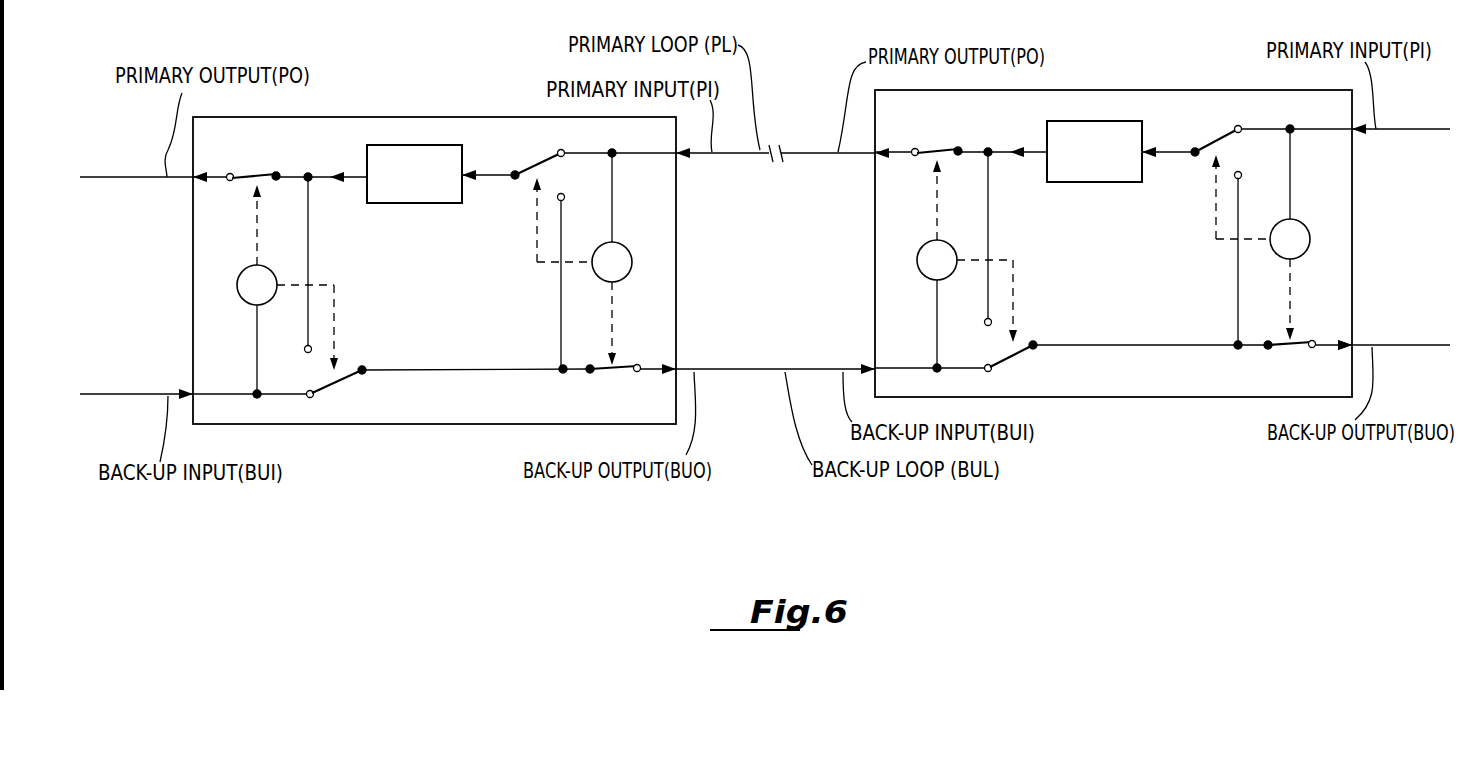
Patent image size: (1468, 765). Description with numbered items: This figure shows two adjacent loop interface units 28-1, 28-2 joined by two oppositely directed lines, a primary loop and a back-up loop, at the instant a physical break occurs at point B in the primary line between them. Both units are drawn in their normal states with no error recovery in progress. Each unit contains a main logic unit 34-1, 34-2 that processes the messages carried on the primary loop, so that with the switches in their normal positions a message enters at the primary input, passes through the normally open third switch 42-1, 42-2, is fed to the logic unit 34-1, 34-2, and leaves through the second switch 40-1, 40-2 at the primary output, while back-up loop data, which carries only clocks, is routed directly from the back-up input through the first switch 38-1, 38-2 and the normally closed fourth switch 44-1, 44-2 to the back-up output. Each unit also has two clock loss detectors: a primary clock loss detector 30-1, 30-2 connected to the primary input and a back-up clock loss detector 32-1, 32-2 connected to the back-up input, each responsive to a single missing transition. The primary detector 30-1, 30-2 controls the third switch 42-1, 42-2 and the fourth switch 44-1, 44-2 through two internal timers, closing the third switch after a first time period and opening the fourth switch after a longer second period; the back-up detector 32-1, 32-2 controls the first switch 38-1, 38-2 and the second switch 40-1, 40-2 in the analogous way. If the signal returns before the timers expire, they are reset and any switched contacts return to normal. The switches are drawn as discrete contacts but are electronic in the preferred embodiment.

The loop interface unit 28-2 is at (375, 117).
The loop interface unit 28-1 is at (1110, 90).
The switch S2 40-2 is at (256, 172).
The switch S2 40-1 is at (935, 148).
The switch S3 42-2 is at (540, 164).
The switch S3 42-1 is at (1213, 136).
The main logic unit 34-2 is at (430, 203).
The main logic unit 34-1 is at (1097, 182).
The clock loss detector 30-2 is at (625, 246).
The clock loss detector 30-1 is at (1300, 222).
The clock loss detector 32-2 is at (243, 298).
The clock loss detector 32-1 is at (922, 274).
The switch S1 38-2 is at (345, 382).
The switch S1 38-1 is at (1012, 356).
The switch S4 44-2 is at (614, 372).
The switch S4 44-1 is at (1286, 348).
The break point B is at (775, 165).